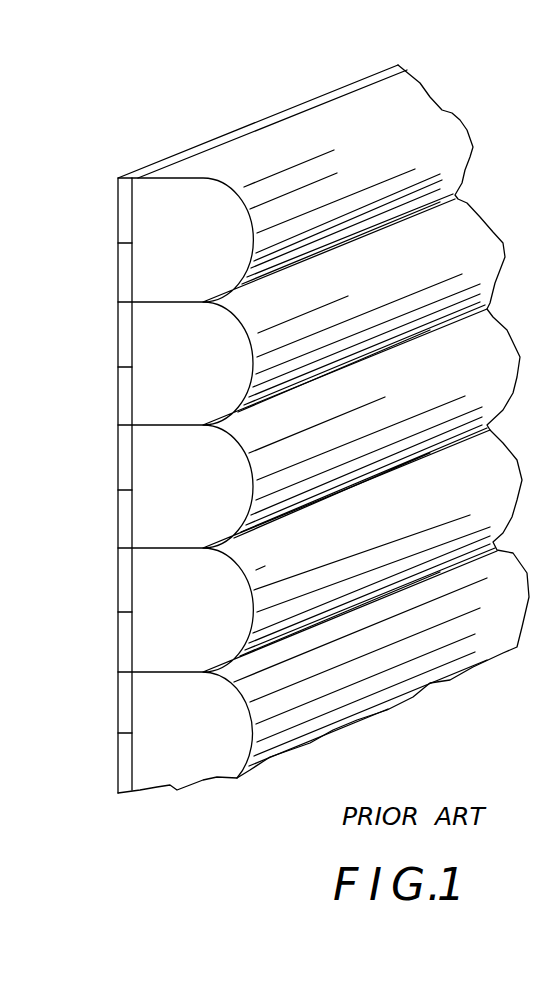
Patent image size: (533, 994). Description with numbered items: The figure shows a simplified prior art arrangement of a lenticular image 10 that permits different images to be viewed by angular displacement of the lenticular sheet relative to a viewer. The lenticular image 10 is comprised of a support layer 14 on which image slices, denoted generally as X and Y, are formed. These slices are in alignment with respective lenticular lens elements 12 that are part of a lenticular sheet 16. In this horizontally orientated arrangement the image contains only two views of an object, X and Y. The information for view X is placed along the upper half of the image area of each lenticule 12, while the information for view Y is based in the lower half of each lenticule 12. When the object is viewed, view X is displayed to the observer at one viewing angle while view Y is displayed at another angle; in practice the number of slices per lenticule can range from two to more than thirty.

The lenticular image 10 is at (113, 143).
The lenticular lens elements 12 is at (435, 125).
The support layer 14 is at (122, 202).
The lenticular sheet 16 is at (435, 157).